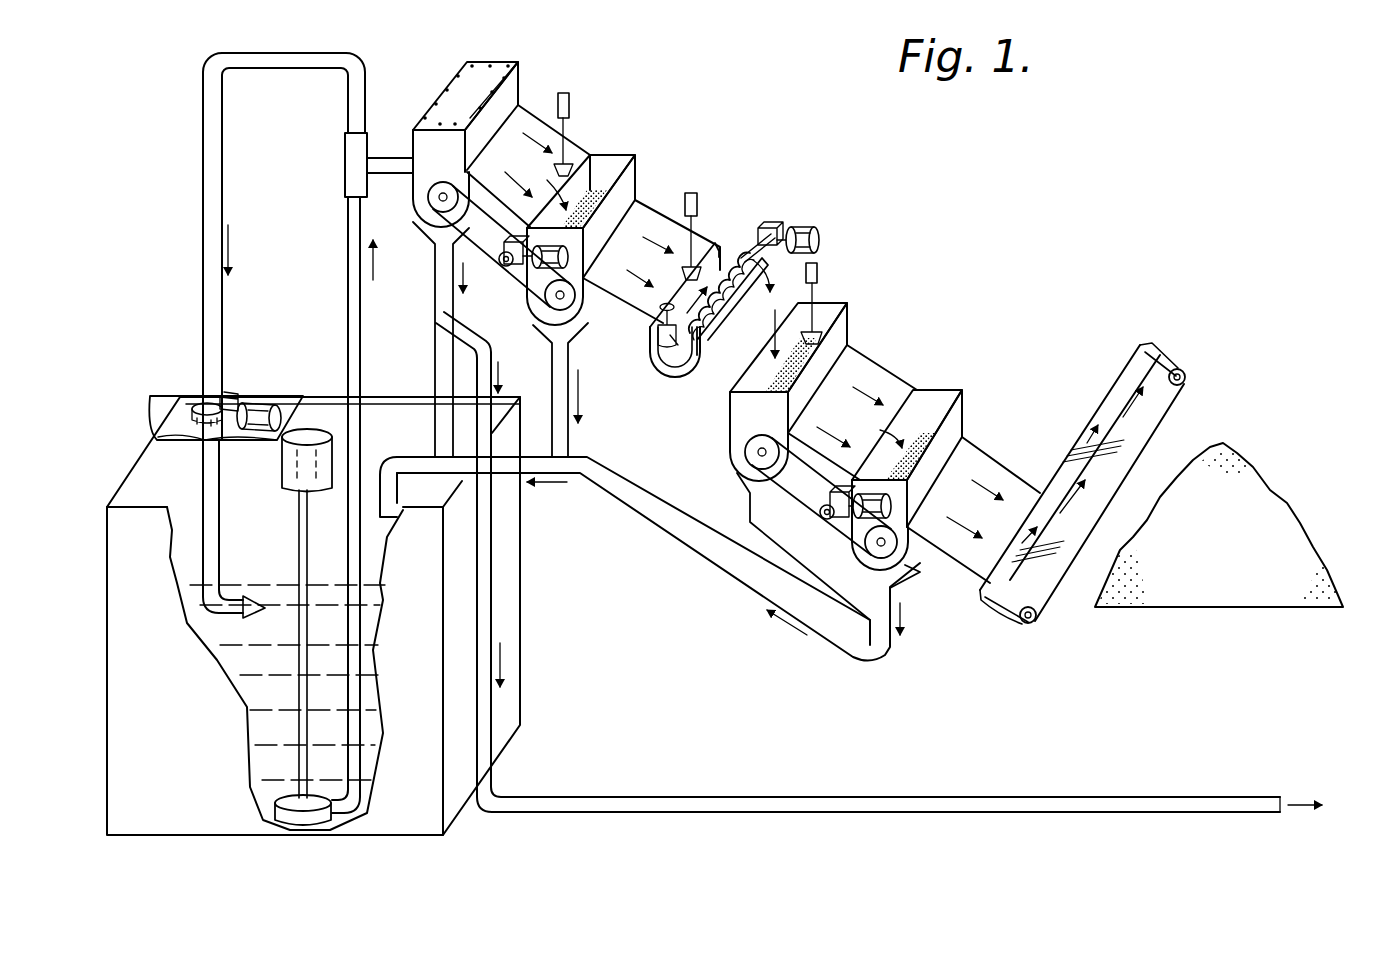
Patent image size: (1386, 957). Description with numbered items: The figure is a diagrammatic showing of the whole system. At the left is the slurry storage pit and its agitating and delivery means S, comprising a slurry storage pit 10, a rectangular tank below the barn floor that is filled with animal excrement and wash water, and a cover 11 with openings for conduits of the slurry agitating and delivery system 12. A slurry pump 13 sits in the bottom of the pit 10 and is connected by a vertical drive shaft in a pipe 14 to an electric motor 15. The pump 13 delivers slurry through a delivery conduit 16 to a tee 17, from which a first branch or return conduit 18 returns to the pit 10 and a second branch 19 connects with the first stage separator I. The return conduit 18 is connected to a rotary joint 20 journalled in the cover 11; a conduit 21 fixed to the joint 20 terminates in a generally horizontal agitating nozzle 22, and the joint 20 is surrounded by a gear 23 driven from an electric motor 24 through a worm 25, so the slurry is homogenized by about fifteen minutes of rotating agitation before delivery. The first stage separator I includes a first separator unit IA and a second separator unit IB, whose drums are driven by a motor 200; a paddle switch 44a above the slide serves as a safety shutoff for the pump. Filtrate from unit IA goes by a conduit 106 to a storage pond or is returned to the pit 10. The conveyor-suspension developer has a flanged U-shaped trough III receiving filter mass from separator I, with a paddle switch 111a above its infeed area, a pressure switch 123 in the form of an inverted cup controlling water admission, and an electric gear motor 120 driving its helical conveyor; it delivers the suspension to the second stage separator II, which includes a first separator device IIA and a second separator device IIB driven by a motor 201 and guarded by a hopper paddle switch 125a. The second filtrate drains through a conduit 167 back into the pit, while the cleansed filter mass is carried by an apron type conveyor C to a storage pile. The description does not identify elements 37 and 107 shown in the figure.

The slurry storage pit 10 is at (100, 612).
The cover 11 is at (290, 400).
The slurry agitating and delivery system 12 is at (205, 230).
The slurry pump 13 is at (275, 795).
The pipe 14 is at (298, 537).
The electric motor 15 is at (283, 470).
The delivery conduit 16 is at (350, 300).
The tee 17 is at (345, 177).
The return conduit 18 is at (205, 152).
The second branch conduit 19 is at (383, 158).
The rotary joint 20 is at (177, 400).
The conduit 21 is at (215, 508).
The agitating nozzle 22 is at (260, 608).
The gear 23 is at (194, 415).
The electric motor 24 is at (254, 404).
The worm 25 is at (230, 397).
The hopper 37 is at (487, 63).
The paddle switch 44a is at (570, 105).
The conduit 106 is at (466, 328).
The return elbow 107 is at (393, 510).
The paddle switch 111a is at (690, 193).
The electric gear motor 120 is at (803, 228).
The pressure switch 123 is at (670, 360).
The paddle switch 125a is at (813, 263).
The conduit 167 is at (885, 658).
The motor 200 is at (568, 257).
The motor 201 is at (848, 524).
The first stage separator I is at (579, 57).
The first separator unit IA is at (530, 85).
The second separator unit IB is at (633, 148).
The second stage separator II is at (900, 325).
The first separator device IIA is at (853, 288).
The second separator device IIB is at (948, 388).
The conveyor-suspension developer trough III is at (744, 215).
The apron type conveyor C is at (1213, 380).
The slurry storage pit, slurry agitating and slurry delivery means S is at (172, 387).